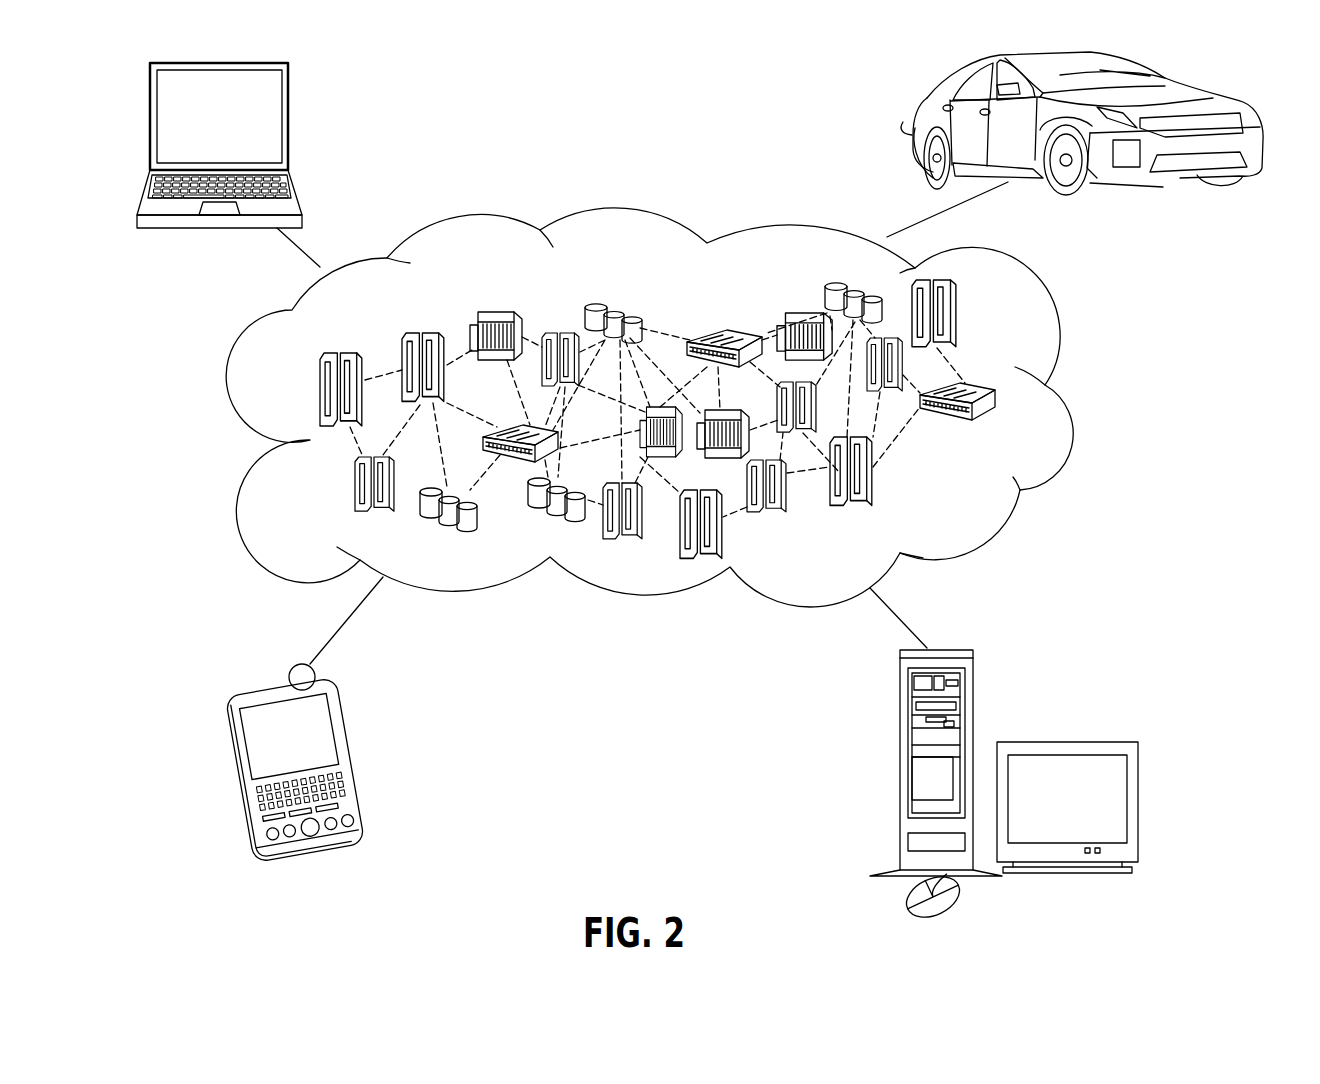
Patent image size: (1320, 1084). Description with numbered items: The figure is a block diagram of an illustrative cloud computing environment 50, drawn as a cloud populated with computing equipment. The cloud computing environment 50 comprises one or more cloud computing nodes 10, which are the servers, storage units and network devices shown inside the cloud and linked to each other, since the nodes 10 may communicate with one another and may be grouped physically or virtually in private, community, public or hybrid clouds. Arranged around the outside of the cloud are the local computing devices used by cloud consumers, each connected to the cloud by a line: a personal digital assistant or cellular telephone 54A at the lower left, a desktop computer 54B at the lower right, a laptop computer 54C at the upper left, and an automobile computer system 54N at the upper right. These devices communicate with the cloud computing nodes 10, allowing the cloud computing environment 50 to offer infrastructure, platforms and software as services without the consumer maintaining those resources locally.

The cloud computing node 10 is at (979, 503).
The cloud computing environment 50 is at (1063, 402).
The personal digital assistant or cellular telephone 54A is at (345, 722).
The desktop computer 54B is at (898, 707).
The laptop computer 54C is at (288, 100).
The automobile computer system 54N is at (914, 120).